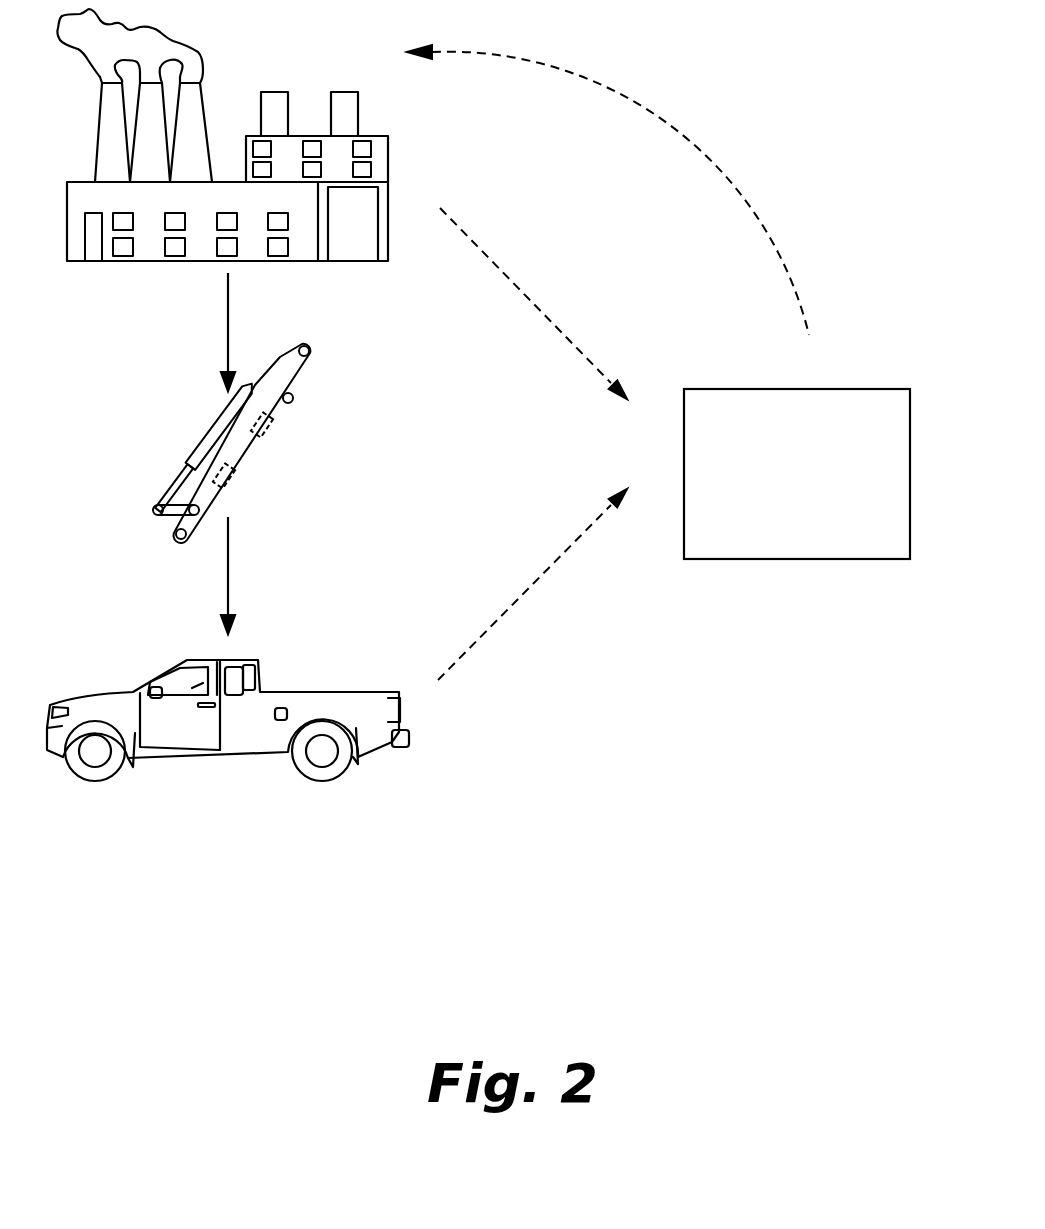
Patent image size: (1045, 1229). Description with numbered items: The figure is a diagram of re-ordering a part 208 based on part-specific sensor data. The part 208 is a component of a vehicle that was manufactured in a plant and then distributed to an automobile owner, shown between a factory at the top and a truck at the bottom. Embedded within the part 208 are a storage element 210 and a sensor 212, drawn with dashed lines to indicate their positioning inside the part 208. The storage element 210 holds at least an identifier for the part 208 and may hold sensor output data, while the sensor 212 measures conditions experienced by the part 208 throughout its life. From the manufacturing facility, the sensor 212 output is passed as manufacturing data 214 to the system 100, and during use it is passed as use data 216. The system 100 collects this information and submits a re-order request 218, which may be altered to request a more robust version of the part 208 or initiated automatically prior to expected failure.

The system 100 is at (780, 500).
The part 208 is at (252, 447).
The storage element 210 is at (273, 420).
The sensor 212 is at (234, 478).
The manufacturing data 214 is at (483, 253).
The use data 216 is at (492, 623).
The re-order request 218 is at (566, 72).